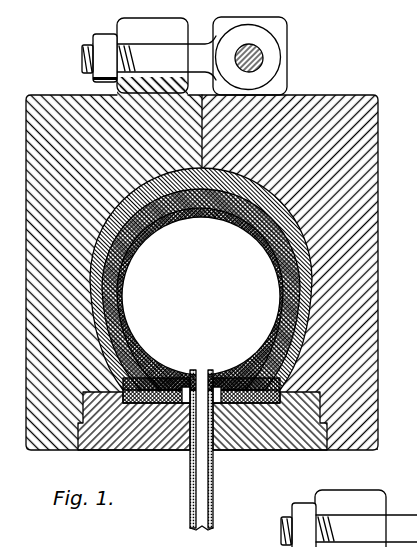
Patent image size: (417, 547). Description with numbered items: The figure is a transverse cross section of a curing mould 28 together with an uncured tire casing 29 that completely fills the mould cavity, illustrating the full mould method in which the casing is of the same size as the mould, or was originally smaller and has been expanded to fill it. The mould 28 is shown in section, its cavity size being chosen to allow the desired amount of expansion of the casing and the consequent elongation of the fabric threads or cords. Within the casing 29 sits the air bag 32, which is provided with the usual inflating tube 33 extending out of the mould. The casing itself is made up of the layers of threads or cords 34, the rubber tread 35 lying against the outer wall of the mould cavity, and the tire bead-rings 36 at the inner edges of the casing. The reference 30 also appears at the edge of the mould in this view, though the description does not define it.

The mould 28 is at (221, 252).
The tire casing 29 is at (300, 222).
The clamp block half 30 is at (416, 277).
The air bag 32 is at (140, 247).
The inflating tube 33 is at (213, 478).
The layers of threads or cords 34 is at (110, 295).
The rubber tread 35 is at (250, 262).
The tire bead-rings 36 is at (147, 395).